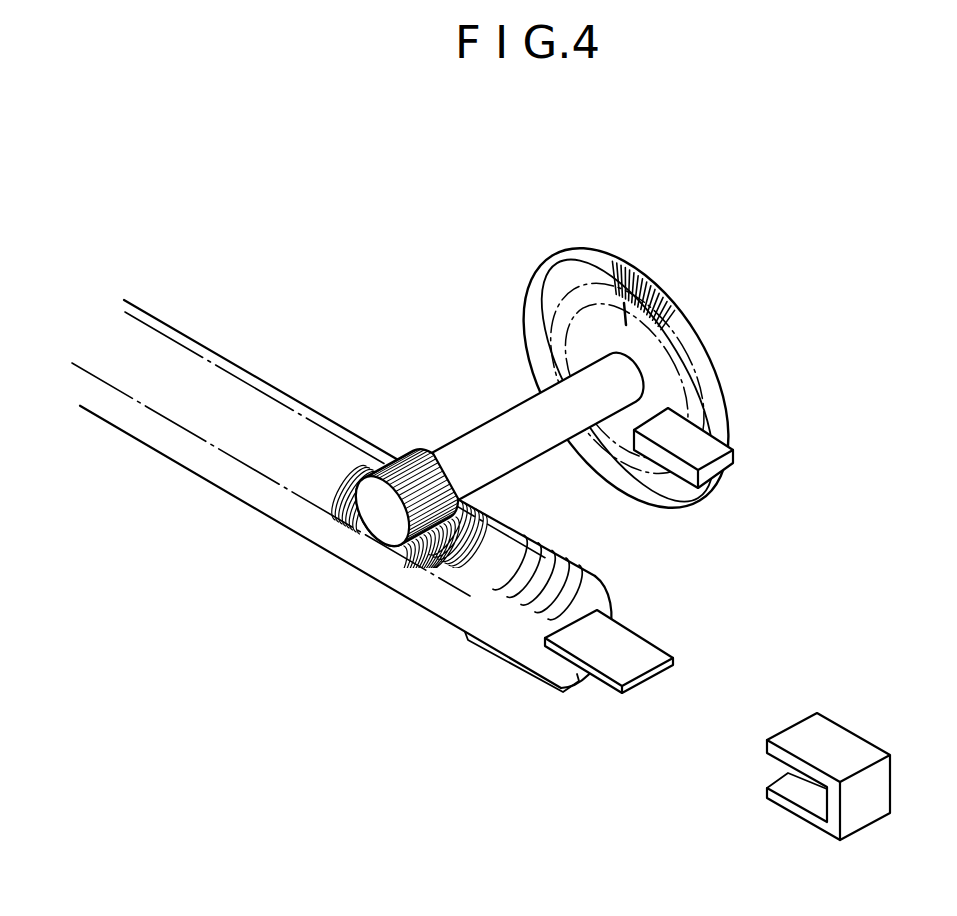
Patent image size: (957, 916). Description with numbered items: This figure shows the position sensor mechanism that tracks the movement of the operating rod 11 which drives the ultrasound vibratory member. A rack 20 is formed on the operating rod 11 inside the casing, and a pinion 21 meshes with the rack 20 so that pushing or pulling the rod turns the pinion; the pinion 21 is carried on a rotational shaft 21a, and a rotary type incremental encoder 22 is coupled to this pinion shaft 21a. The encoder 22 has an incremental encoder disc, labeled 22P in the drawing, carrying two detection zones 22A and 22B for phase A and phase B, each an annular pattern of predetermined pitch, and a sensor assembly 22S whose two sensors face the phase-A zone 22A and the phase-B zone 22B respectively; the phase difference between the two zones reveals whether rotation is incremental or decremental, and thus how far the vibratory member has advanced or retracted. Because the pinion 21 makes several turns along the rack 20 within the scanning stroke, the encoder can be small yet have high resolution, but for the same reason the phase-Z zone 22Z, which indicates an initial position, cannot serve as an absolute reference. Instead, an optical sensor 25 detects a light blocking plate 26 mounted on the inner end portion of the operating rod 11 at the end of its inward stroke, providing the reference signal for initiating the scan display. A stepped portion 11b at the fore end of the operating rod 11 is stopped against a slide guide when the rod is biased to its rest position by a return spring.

The operating rod 11 is at (363, 558).
The stepped portion 11b is at (513, 663).
The rack 20 is at (420, 563).
The pinion 21 is at (402, 448).
The rotational shaft 21a is at (480, 428).
The rotary type incremental encoder 22 is at (752, 463).
The phase-A detection zone 22A is at (661, 288).
The phase-B detection zone 22B is at (633, 298).
The disk plate 22P is at (714, 361).
The sensor assembly 22S is at (688, 477).
The phase-Z zone 22Z is at (623, 316).
The optical sensor 25 is at (833, 825).
The light blocking plate 26 is at (611, 683).